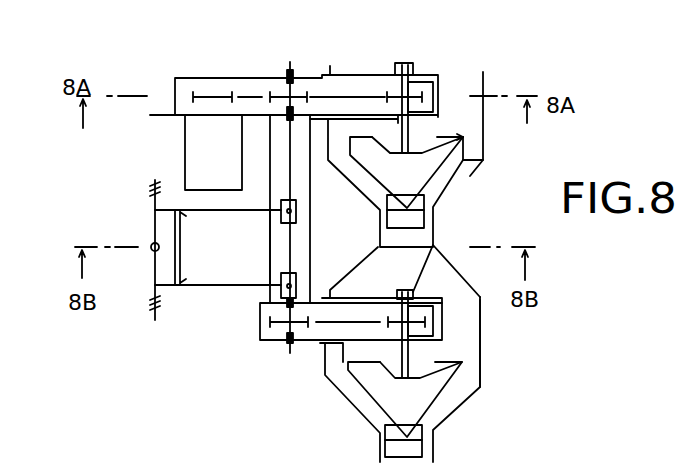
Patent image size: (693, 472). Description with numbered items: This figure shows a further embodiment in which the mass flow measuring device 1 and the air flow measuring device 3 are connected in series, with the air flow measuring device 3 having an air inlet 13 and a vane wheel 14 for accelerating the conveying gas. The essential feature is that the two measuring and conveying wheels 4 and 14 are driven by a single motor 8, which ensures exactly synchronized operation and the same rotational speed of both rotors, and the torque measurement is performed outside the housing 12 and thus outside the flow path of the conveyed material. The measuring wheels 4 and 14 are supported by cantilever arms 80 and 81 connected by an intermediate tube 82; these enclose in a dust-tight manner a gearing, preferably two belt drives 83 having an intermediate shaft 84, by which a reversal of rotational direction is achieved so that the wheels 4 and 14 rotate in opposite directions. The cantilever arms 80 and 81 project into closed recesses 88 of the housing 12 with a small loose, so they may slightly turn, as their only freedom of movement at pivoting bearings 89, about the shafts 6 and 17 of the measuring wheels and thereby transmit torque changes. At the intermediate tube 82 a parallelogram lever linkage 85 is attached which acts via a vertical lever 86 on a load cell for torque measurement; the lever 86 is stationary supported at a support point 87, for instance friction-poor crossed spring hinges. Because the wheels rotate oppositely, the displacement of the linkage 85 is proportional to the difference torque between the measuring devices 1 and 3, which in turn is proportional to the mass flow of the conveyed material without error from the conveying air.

The mass flow measuring device 1 is at (480, 178).
The air flow measuring device 3 is at (447, 422).
The measuring wheel 4 is at (428, 175).
The shaft 6 is at (420, 125).
The motor 8 is at (192, 165).
The housing 12 is at (481, 360).
The air inlet 13 is at (385, 443).
The vane wheel 14 is at (380, 405).
The shaft 17 is at (436, 358).
The cantilever arm 80 is at (260, 338).
The cantilever arm 81 is at (174, 114).
The intermediate tube 82 is at (312, 247).
The belt drives 83 is at (248, 95).
The intermediate shaft 84 is at (290, 168).
The parallelogram lever linkage 85 is at (203, 287).
The vertical lever 86 is at (160, 248).
The support point 87 is at (149, 298).
The closed recesses 88 is at (440, 87).
The pivoting bearings 89 is at (433, 244).